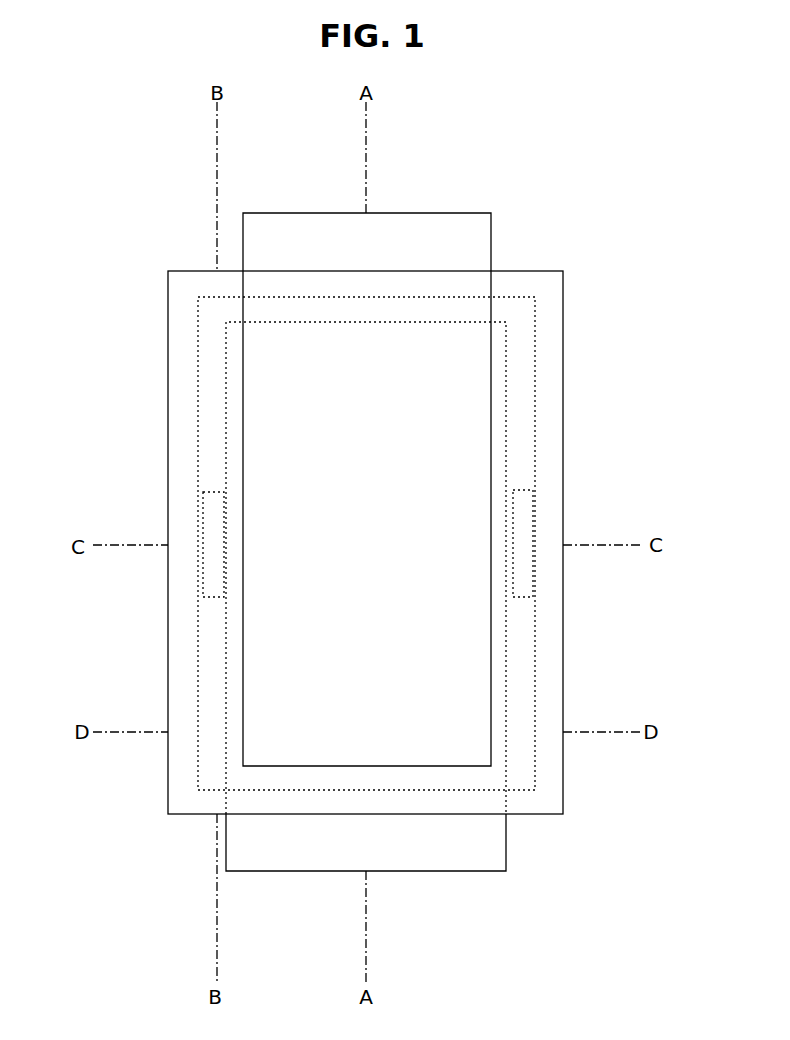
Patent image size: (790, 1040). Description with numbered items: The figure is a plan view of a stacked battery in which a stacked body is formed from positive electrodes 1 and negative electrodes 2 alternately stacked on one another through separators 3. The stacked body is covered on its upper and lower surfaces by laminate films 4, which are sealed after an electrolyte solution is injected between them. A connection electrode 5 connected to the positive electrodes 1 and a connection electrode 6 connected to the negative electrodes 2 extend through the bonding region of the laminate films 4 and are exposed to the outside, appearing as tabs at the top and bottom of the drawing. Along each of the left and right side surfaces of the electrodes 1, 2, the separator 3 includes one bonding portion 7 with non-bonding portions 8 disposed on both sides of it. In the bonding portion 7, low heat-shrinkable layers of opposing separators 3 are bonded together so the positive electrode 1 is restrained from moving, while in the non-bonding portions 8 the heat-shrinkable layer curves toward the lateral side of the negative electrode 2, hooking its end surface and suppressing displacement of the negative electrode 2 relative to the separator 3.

The positive electrode 1 is at (476, 374).
The negative electrode 2 is at (506, 680).
The separator 3 is at (531, 452).
The laminate film 4 is at (553, 630).
The connection electrode 5 is at (487, 234).
The connection electrode 6 is at (498, 852).
The bonding portion 7 is at (203, 522).
The non-bonding portion 8 is at (206, 390).